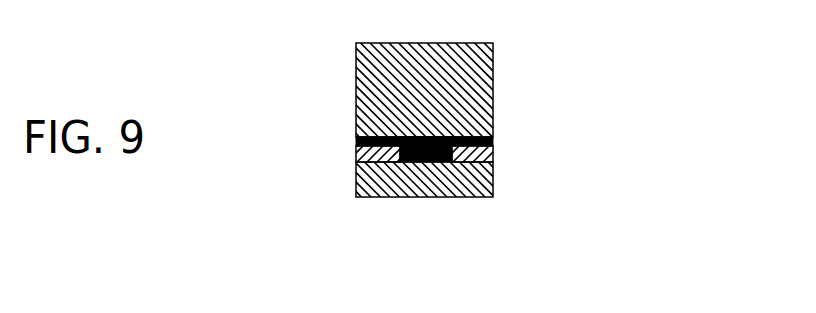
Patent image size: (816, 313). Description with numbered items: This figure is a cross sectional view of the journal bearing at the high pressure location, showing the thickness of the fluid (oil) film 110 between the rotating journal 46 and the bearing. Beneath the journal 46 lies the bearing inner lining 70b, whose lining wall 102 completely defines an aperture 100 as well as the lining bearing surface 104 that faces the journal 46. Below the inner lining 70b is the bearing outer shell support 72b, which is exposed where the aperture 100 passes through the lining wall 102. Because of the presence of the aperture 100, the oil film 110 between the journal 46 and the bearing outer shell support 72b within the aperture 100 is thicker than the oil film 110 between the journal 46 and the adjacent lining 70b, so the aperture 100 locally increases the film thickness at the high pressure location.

The journal 46 is at (485, 112).
The fluid (oil) film 110 is at (493, 141).
The lining bearing surface 104 is at (356, 140).
The bearing inner lining 70b is at (340, 153).
The lining wall 102 is at (487, 157).
The aperture 100 is at (430, 162).
The bearing outer shell support 72b is at (503, 198).